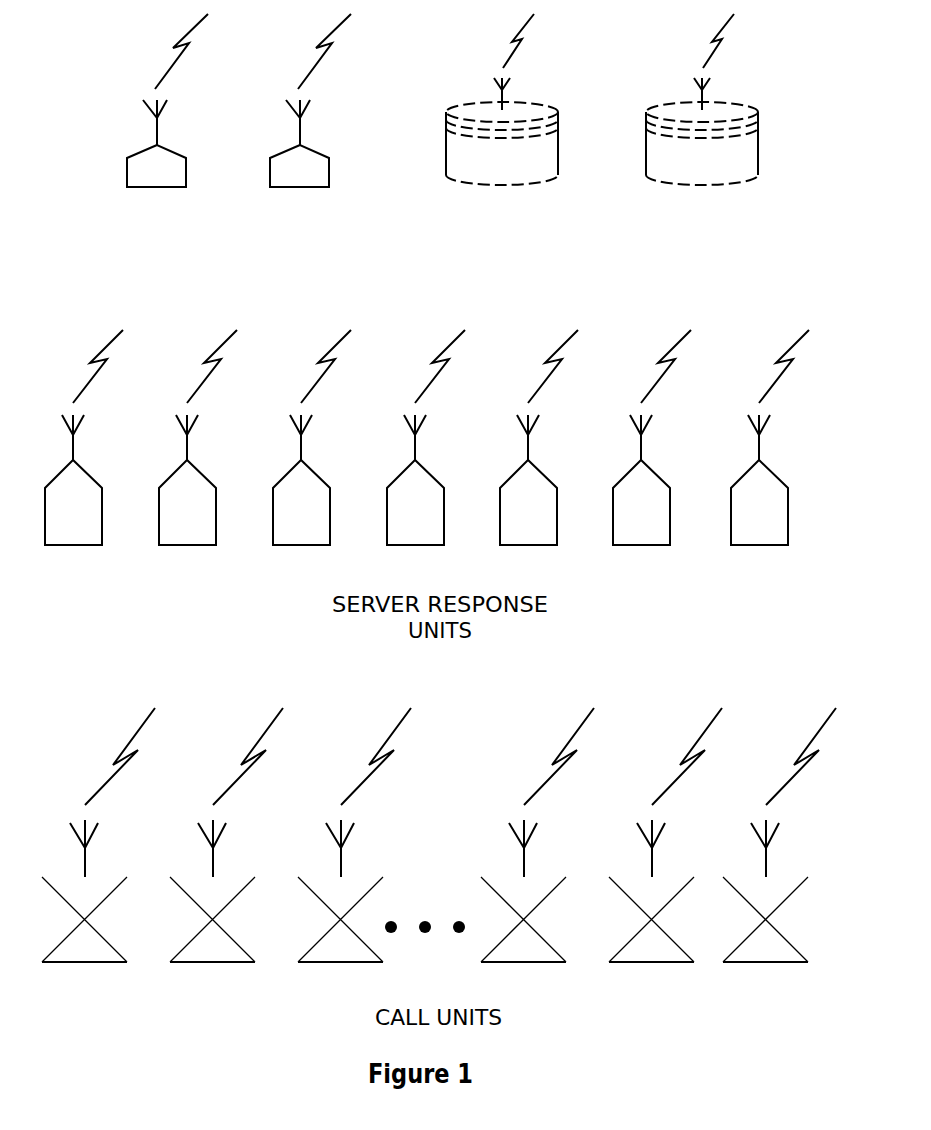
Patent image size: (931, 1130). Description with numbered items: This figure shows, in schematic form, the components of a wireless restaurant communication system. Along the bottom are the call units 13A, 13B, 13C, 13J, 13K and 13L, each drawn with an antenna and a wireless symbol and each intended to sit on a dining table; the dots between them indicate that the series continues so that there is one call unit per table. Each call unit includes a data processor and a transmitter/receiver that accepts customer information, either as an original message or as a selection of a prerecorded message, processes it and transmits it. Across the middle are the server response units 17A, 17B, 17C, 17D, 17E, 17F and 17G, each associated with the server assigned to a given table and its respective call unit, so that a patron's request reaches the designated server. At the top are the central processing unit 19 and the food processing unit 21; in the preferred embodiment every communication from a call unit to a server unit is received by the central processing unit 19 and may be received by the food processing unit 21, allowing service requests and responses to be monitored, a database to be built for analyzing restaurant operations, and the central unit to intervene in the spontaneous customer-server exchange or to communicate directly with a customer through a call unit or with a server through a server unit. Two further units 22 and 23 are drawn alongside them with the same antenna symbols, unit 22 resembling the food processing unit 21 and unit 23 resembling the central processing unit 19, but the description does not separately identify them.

The call unit 13A is at (93, 855).
The call unit 13B is at (221, 855).
The call unit 13C is at (354, 854).
The call unit 13J is at (540, 854).
The call unit 13K is at (665, 854).
The call unit 13L is at (779, 854).
The server unit 17A is at (29, 545).
The server unit 17B is at (214, 454).
The server unit 17C is at (328, 454).
The server unit 17D is at (443, 454).
The server unit 17E is at (554, 454).
The server unit 17F is at (667, 454).
The server unit 17G is at (787, 454).
The central processing unit 19 is at (502, 134).
The food processing unit 21 is at (183, 133).
The mobile unit 22 is at (326, 133).
The base station / data storage unit 23 is at (702, 134).